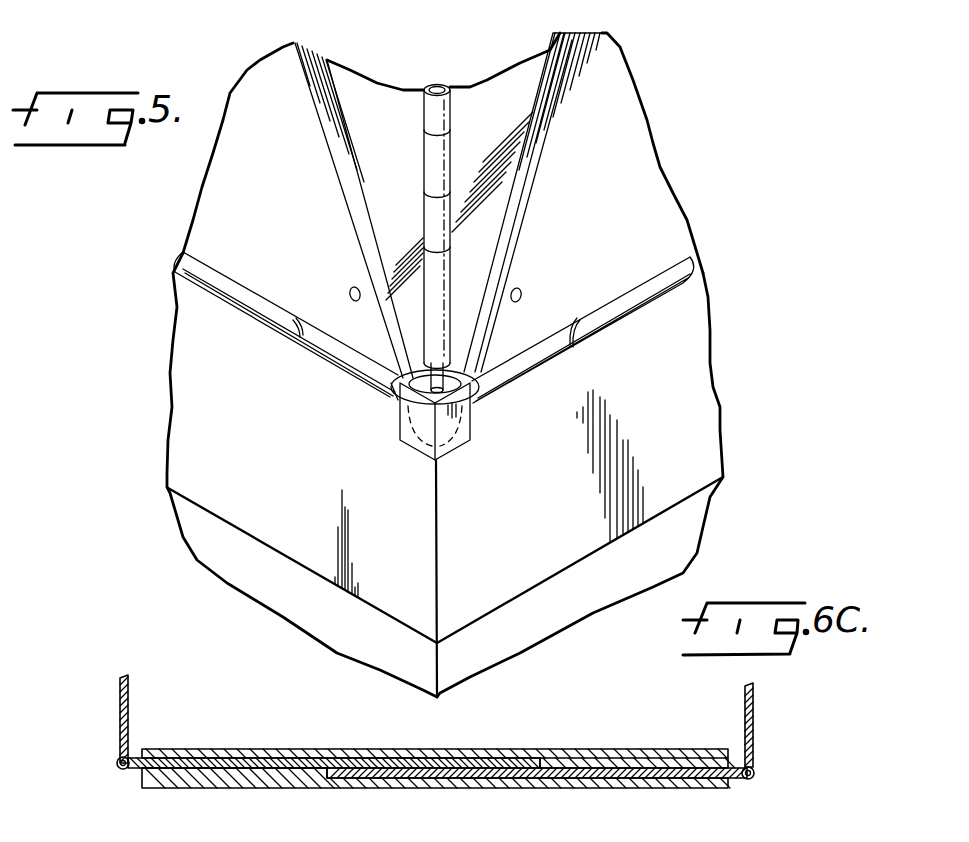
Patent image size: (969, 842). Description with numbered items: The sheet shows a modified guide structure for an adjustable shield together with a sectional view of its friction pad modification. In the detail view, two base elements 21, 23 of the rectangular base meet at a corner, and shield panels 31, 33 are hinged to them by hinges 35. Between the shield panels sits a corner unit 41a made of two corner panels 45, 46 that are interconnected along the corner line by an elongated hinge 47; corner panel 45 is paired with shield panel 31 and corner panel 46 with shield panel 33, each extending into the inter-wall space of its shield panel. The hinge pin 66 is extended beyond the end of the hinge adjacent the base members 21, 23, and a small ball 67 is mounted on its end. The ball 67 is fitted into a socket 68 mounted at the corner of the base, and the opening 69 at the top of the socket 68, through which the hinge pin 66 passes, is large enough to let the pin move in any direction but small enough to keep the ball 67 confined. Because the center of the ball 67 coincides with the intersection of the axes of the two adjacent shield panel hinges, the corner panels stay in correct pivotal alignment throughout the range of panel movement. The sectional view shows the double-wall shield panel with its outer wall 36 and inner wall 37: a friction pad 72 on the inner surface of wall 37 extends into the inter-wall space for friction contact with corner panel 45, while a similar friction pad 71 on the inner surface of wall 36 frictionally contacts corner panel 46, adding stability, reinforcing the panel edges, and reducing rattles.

In FIG. 5, the base element 21 is at (690, 377).
In FIG. 5, the base element 23 is at (193, 370).
In FIG. 5, the shield panel 31 is at (630, 120).
In FIG. 5, the shield panel 33 is at (213, 183).
In FIG. 5, the hinge 35 is at (180, 266).
In FIG. 6C, the outer wall 36 is at (663, 788).
In FIG. 6C, the inner wall 37 is at (583, 720).
In FIG. 5, the corner unit 41a is at (437, 77).
In FIG. 5, the corner panel 45 is at (498, 195).
In FIG. 6C, the corner panel 45 is at (380, 763).
In FIG. 5, the corner panel 46 is at (383, 163).
In FIG. 6C, the corner panel 46 is at (120, 703).
In FIG. 5, the elongated hinge 47 is at (447, 117).
In FIG. 6C, the elongated hinge 47 is at (118, 767).
In FIG. 5, the hinge pin 66 is at (470, 367).
In FIG. 5, the ball 67 is at (397, 410).
In FIG. 5, the socket 68 is at (458, 443).
In FIG. 5, the opening 69 is at (475, 398).
In FIG. 6C, the friction pad 71 is at (250, 770).
In FIG. 6C, the friction pad 72 is at (672, 728).